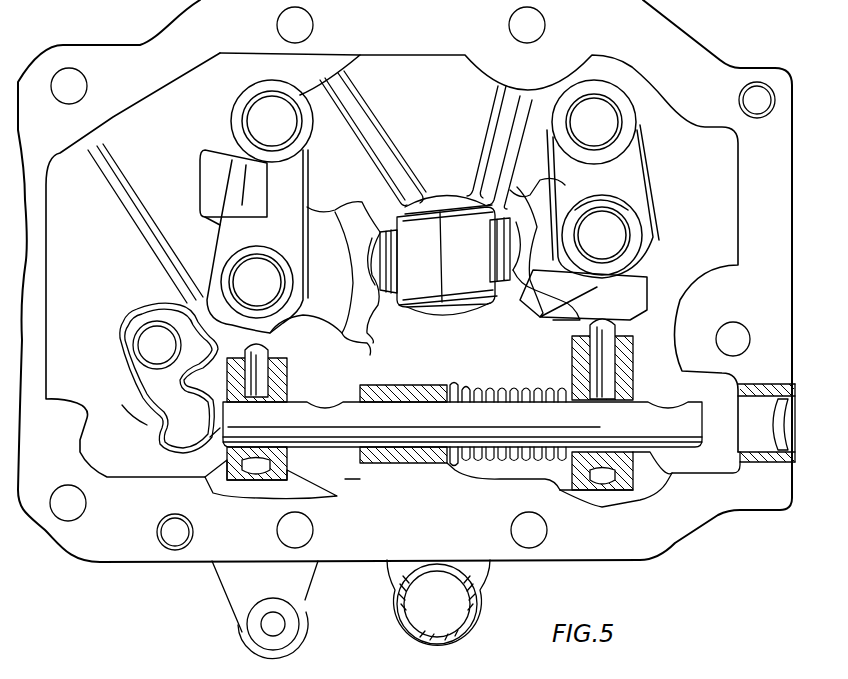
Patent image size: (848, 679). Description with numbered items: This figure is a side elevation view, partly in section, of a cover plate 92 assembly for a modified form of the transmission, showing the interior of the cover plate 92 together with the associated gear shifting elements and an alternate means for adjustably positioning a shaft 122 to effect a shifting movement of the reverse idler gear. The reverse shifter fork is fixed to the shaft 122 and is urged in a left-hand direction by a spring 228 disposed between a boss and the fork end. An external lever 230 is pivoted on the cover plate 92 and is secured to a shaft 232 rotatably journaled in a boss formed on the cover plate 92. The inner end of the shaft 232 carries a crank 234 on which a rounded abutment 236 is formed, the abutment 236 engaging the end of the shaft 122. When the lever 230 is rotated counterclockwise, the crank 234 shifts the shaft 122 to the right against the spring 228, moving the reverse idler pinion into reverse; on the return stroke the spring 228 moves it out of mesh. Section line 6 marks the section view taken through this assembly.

The section line 6- 6 is at (423, 359).
The cover plate 92 is at (696, 194).
The shaft 122 is at (476, 428).
The spring 228 is at (530, 370).
The external lever 230 is at (237, 585).
The shaft 232 is at (163, 354).
The crank 234 is at (163, 404).
The rounded abutment 236 is at (215, 421).